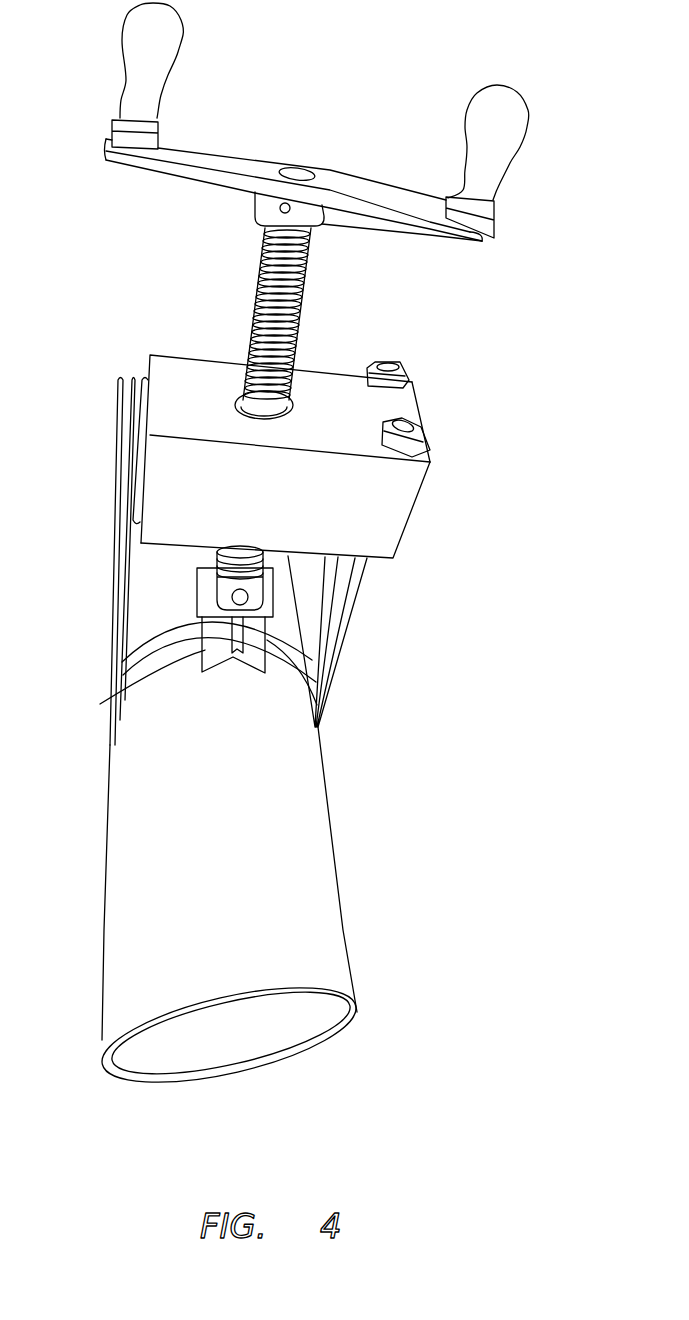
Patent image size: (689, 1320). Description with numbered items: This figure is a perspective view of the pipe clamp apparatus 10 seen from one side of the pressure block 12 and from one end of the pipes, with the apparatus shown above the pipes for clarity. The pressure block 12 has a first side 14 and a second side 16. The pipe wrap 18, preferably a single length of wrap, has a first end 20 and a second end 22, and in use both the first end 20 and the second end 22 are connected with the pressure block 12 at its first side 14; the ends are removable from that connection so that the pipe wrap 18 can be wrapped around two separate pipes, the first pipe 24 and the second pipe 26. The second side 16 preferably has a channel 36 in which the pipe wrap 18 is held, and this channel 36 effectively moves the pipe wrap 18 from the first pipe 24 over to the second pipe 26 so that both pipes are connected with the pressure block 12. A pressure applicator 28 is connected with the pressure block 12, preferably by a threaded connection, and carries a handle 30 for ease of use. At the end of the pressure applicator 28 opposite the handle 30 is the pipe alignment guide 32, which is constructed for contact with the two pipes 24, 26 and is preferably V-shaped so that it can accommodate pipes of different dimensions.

The pipe clamp apparatus 10 is at (512, 357).
The pressure block 12 is at (275, 514).
The first side 14 is at (403, 408).
The second side 16 is at (172, 368).
The pipe wrap 18 is at (115, 558).
The first end 20 is at (408, 372).
The second end 22 is at (420, 437).
The first pipe 24 is at (148, 605).
The second pipe 26 is at (300, 798).
The pressure applicator 28 is at (298, 333).
The handle 30 is at (480, 222).
The pipe alignment guide 32 is at (158, 672).
The channel 36 is at (124, 368).